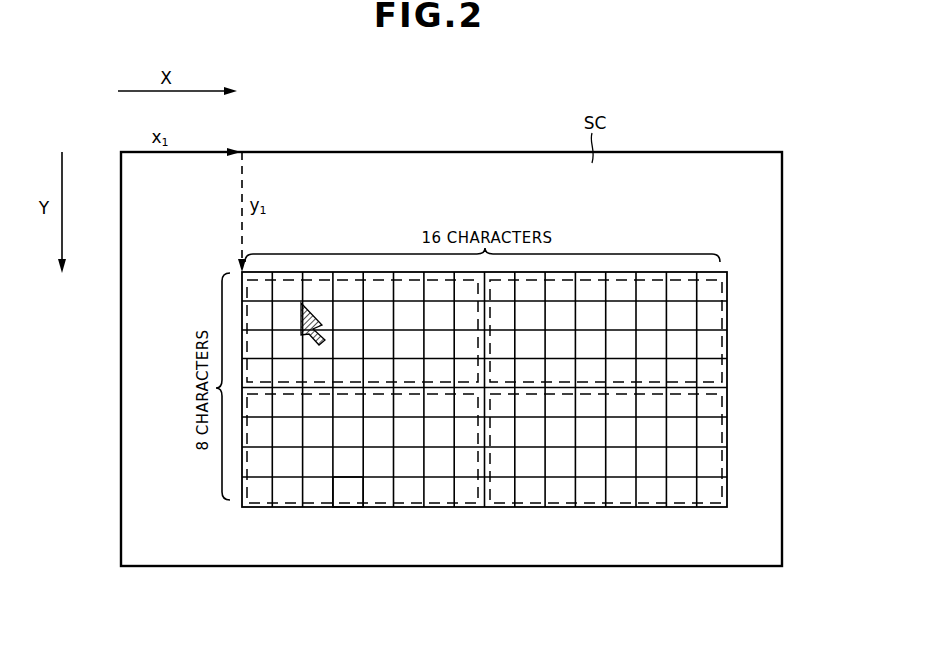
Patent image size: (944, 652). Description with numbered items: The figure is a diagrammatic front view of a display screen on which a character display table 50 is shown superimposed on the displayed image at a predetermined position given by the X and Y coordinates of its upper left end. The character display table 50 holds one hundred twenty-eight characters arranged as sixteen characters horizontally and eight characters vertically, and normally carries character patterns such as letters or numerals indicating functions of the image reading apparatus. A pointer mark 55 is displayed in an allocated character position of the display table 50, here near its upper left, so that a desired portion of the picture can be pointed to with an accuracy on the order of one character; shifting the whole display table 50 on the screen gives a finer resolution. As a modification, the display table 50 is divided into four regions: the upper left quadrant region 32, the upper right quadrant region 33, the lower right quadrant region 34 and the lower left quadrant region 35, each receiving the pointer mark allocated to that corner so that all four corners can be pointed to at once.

The upper left quadrant region 32 is at (406, 352).
The upper right quadrant region 33 is at (712, 318).
The lower right quadrant region 34 is at (712, 432).
The lower left quadrant region 35 is at (348, 495).
The character display table 50 is at (588, 522).
The pointer mark 55 is at (301, 333).